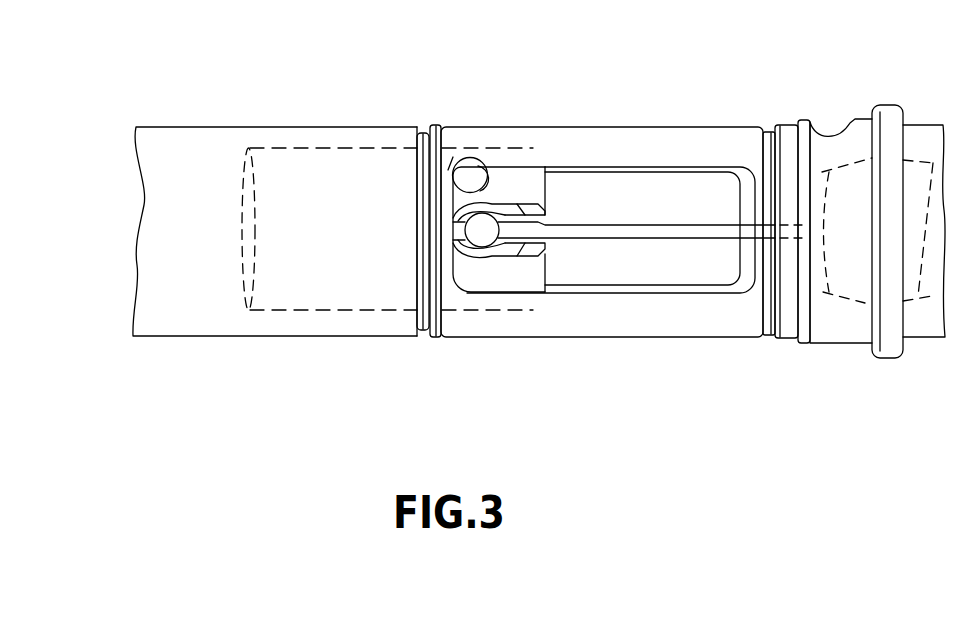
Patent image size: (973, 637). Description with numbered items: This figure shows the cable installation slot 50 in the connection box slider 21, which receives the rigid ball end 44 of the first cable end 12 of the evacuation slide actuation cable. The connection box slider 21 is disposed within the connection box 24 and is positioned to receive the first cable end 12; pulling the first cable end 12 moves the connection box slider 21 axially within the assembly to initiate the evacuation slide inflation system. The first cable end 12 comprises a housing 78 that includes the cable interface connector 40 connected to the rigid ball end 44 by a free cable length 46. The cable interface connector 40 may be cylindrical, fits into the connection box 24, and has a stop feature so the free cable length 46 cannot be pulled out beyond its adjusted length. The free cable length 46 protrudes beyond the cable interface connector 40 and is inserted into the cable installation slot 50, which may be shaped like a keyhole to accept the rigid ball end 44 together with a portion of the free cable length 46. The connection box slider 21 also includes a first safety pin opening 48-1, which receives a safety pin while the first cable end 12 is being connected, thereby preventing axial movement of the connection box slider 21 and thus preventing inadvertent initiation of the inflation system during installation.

The connection box 24 is at (207, 152).
The first safety pin opening 48-1 is at (458, 152).
The cable installation slot 50 is at (528, 208).
The free cable length 46 is at (612, 225).
The first cable end 12 is at (669, 200).
The housing 78 is at (913, 124).
The cable interface connector 40 is at (855, 282).
The rigid ball end 44 is at (478, 237).
The connection box slider 21 is at (512, 272).